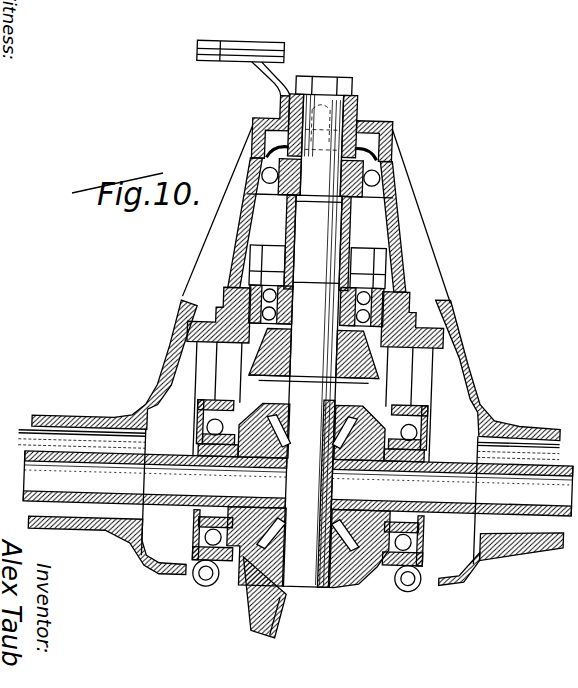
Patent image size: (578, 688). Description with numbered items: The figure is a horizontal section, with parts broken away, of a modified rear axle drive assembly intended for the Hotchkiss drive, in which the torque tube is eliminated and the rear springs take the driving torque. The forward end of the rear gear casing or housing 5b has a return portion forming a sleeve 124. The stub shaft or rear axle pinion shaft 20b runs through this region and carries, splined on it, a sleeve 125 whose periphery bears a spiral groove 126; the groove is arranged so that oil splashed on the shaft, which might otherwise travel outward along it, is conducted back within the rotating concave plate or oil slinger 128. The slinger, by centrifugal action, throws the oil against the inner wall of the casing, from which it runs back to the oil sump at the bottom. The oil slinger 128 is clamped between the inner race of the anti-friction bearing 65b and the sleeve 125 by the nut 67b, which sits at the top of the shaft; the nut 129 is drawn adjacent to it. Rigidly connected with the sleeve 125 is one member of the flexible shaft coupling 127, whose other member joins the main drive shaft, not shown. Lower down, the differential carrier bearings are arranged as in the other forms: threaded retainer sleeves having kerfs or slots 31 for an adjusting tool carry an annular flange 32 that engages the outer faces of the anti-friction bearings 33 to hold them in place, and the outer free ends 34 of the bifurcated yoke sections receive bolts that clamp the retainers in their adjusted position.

The flexible shaft coupling 127 is at (215, 66).
The nut 129 is at (303, 107).
The nut 67b is at (332, 90).
The sleeve 125 is at (350, 110).
The spiral groove 126 is at (270, 117).
The sleeve 124 is at (374, 130).
The rotating concave plate or oil slinger 128 is at (378, 155).
The anti-friction bearing 65b is at (370, 192).
The stub shaft or rear axle pinion shaft 20b is at (331, 232).
The rear gear casing or housing 5b is at (470, 387).
The annular flange 32 is at (202, 410).
The anti-friction bearings 33 is at (200, 421).
The kerfs or slots 31 is at (380, 505).
The outer free end of bifurcated yoke end 34 is at (217, 589).